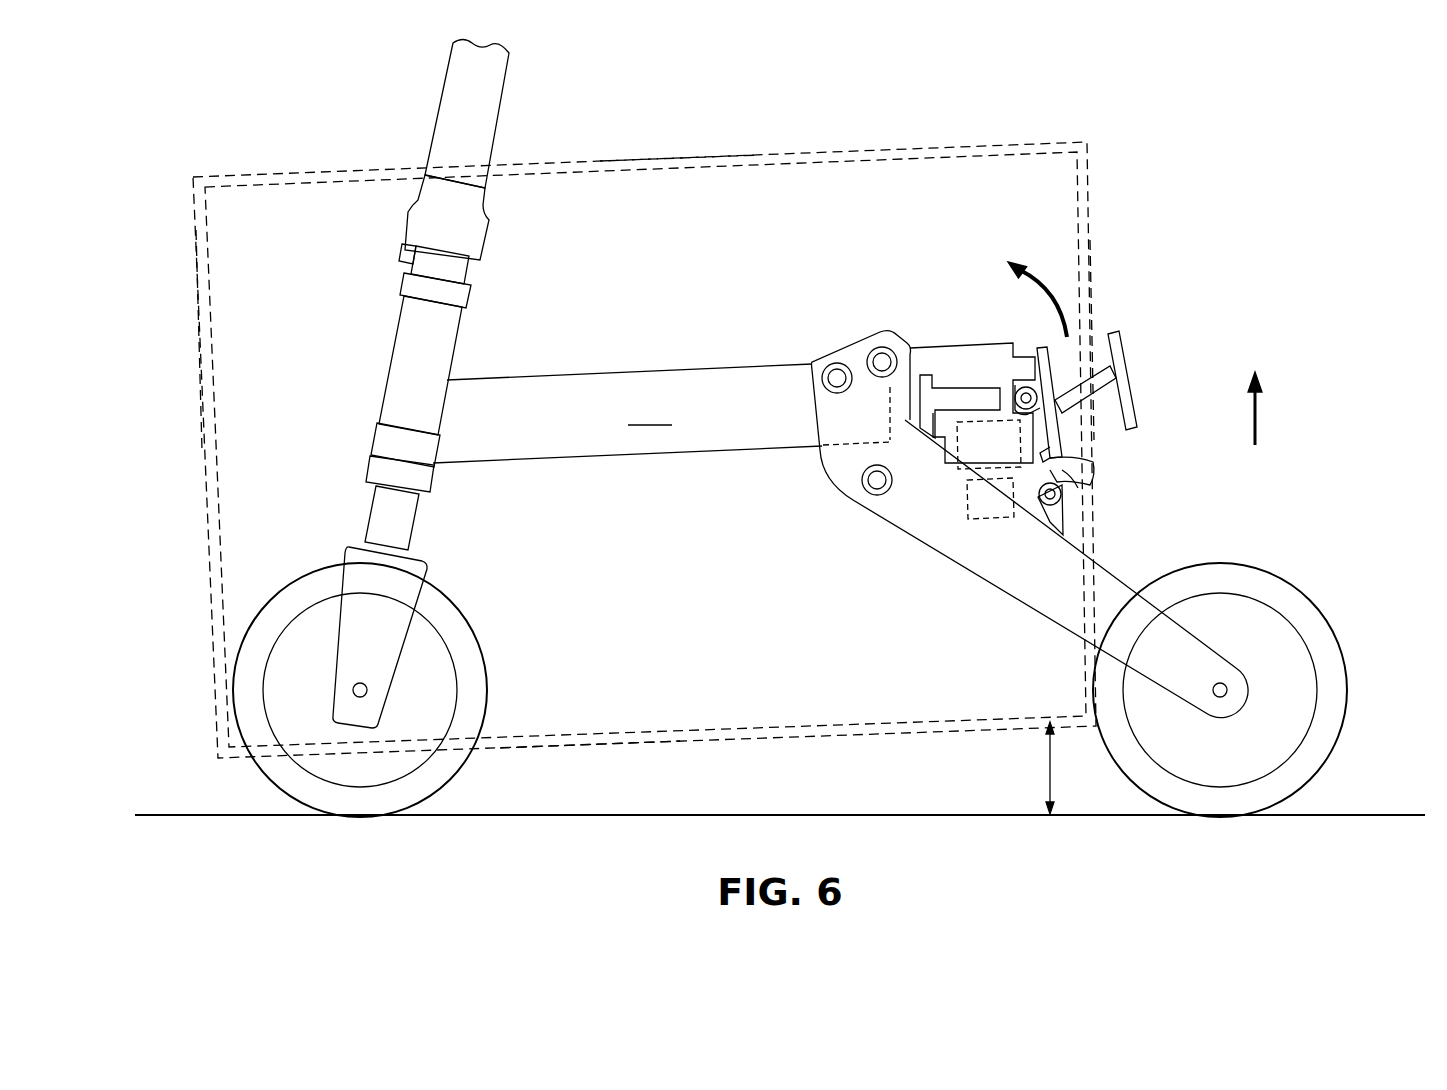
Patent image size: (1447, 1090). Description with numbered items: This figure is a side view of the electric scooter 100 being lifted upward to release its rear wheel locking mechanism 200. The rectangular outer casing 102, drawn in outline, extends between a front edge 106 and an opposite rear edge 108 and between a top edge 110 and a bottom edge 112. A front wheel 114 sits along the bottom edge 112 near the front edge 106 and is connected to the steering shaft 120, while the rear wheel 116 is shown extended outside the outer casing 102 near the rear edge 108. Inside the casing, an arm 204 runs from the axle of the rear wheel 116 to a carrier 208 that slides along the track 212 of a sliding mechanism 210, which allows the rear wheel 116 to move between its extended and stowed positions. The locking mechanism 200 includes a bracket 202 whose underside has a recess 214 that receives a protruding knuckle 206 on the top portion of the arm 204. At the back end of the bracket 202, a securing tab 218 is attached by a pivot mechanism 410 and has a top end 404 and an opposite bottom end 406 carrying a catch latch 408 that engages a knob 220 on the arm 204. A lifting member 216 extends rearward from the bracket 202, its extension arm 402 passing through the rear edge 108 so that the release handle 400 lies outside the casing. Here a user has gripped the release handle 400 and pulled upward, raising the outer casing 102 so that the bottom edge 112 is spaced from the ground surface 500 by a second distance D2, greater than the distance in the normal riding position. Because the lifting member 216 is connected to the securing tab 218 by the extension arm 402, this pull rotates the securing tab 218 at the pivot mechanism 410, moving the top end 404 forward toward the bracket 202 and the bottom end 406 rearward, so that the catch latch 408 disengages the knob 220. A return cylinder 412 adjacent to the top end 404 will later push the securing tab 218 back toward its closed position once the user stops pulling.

The electric scooter 100 is at (652, 110).
The outer casing 102 is at (1093, 222).
The front edge 106 is at (196, 355).
The rear edge 108 is at (1093, 258).
The top edge 110 is at (770, 150).
The bottom edge 112 is at (675, 745).
The front wheel 114 is at (267, 768).
The rear wheel 116 is at (1350, 690).
The steering shaft 120 is at (437, 118).
The rear wheel locking mechanism 200 is at (946, 254).
The bracket 202 is at (930, 345).
The arm 204 is at (977, 577).
The protruding knuckle 206 is at (985, 505).
The carrier 208 is at (857, 345).
The sliding mechanism 210 is at (655, 365).
The track 212 is at (650, 412).
The recess 214 is at (990, 383).
The lifting member 216 is at (1130, 375).
The securing tab 218 is at (1055, 368).
The knob 220 is at (1063, 495).
The release handle 400 is at (1095, 390).
The extension arm 402 is at (1231, 434).
The top end 404 is at (1045, 347).
The bottom end 406 is at (1080, 463).
The catch latch 408 is at (1080, 490).
The pivot mechanism 410 is at (1023, 418).
The return cylinder 412 is at (1023, 350).
The ground surface 500 is at (1383, 812).
The second distance D2 is at (1045, 775).